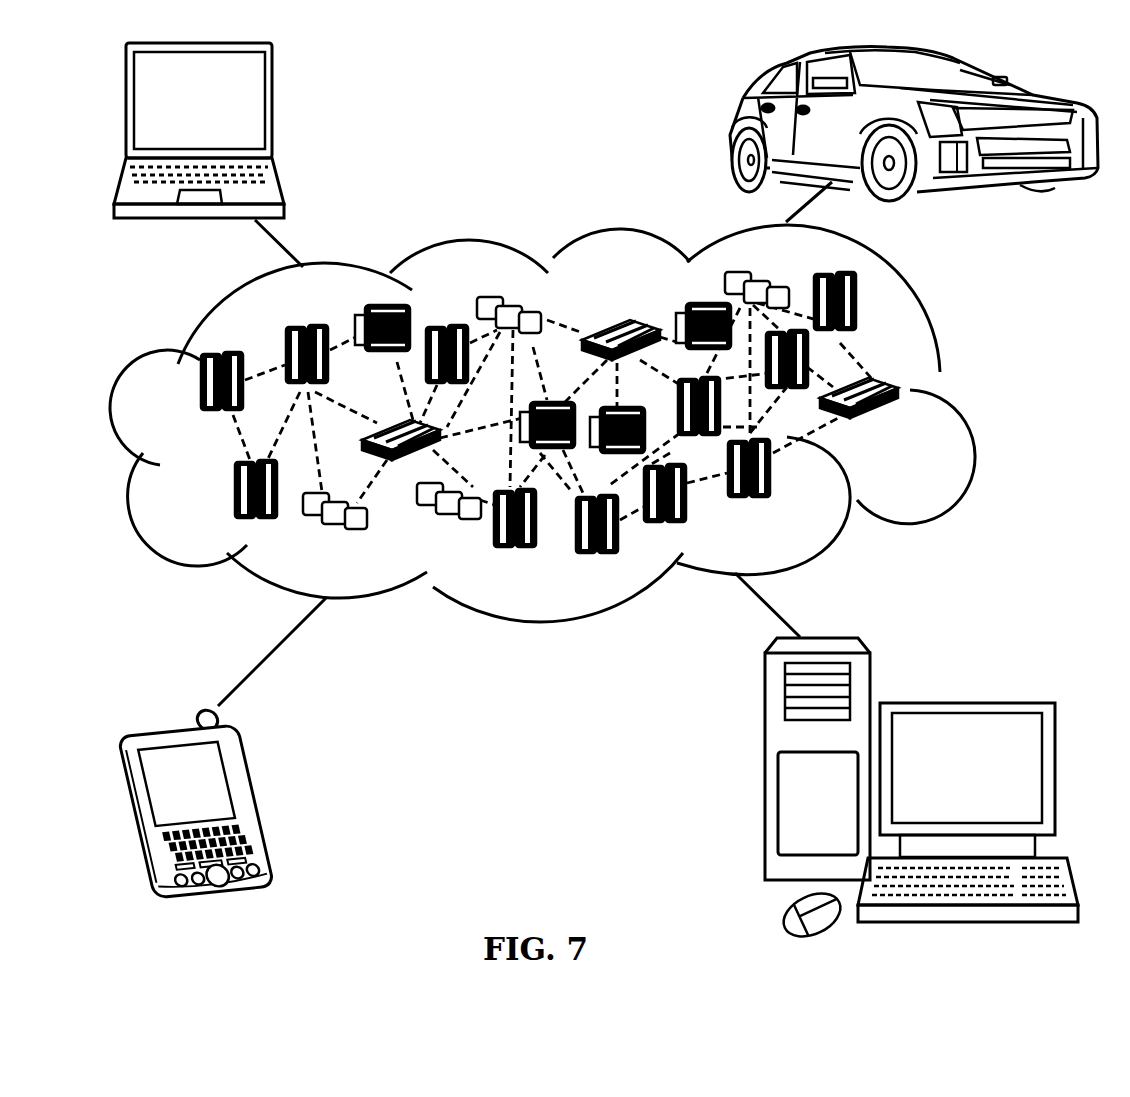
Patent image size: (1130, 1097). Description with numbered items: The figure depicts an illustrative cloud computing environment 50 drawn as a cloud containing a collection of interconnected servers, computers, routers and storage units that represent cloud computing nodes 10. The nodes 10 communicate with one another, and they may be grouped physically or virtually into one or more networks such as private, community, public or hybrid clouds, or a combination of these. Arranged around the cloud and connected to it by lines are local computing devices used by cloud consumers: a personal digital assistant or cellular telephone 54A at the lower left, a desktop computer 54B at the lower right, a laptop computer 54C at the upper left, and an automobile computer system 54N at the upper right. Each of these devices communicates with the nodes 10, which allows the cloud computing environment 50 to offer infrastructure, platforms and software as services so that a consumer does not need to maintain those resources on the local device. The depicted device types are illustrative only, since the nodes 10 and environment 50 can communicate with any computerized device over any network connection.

The cloud computing nodes 10 is at (901, 427).
The cloud computing environment 50 is at (963, 401).
The personal digital assistant (PDA) or cellular telephone 54A is at (262, 799).
The desktop computer 54B is at (960, 702).
The laptop computer 54C is at (274, 107).
The automobile computer system 54N is at (736, 123).